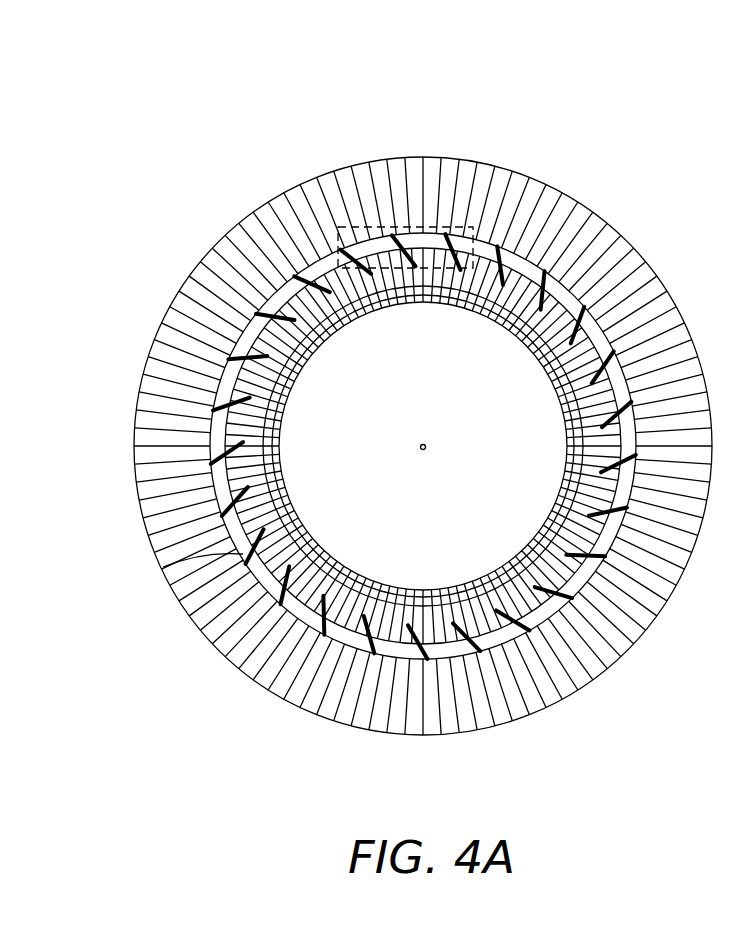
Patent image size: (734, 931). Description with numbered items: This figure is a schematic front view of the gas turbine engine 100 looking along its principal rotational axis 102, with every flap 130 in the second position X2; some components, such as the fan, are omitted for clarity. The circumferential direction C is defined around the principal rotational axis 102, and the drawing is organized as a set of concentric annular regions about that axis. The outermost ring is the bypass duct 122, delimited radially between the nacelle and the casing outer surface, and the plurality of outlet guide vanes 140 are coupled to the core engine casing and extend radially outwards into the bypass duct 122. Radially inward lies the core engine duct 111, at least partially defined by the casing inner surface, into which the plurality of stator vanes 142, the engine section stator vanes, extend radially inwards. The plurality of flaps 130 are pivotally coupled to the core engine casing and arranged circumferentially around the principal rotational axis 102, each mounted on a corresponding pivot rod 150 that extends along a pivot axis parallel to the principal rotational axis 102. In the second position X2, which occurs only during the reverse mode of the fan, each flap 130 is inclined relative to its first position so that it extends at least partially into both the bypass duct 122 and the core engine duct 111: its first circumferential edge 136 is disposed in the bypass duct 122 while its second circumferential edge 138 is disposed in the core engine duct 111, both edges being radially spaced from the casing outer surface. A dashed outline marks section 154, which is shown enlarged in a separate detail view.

The gas turbine engine 100 is at (586, 91).
The principal rotational axis 102 is at (423, 447).
The core engine duct 111 is at (448, 638).
The bypass duct 122 is at (633, 285).
The flaps 130 is at (166, 574).
The first circumferential edge 136 is at (376, 658).
The second circumferential edge 138 is at (338, 660).
The outlet guide vanes 140 is at (248, 223).
The stator vanes 142 is at (583, 600).
The pivot rods 150 is at (583, 307).
The section 154 is at (426, 237).
The second position X2 is at (212, 500).
The circumferential direction C is at (445, 87).